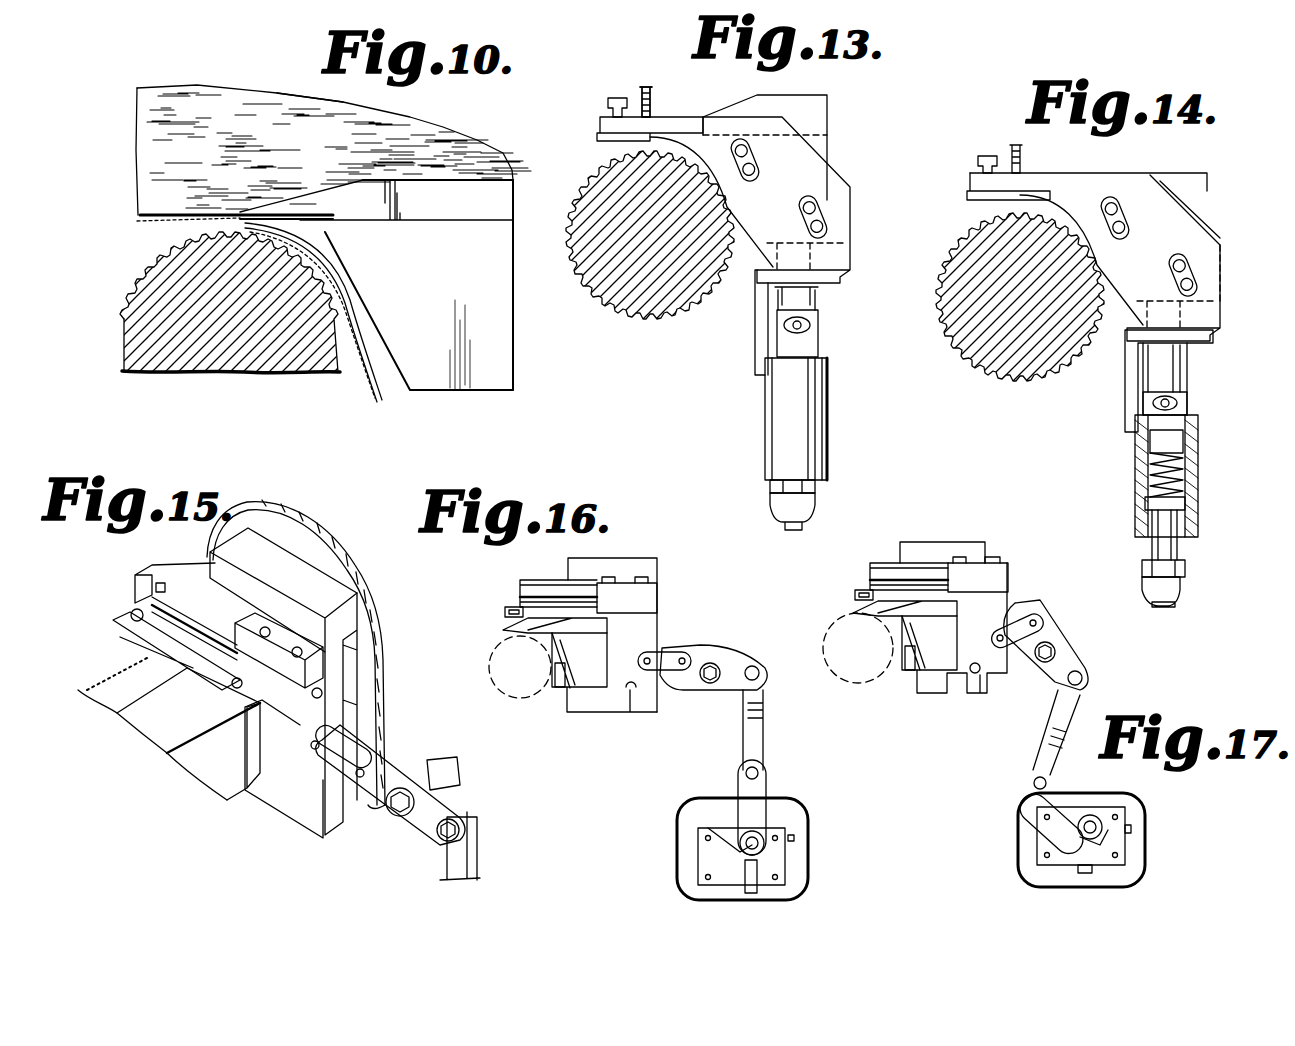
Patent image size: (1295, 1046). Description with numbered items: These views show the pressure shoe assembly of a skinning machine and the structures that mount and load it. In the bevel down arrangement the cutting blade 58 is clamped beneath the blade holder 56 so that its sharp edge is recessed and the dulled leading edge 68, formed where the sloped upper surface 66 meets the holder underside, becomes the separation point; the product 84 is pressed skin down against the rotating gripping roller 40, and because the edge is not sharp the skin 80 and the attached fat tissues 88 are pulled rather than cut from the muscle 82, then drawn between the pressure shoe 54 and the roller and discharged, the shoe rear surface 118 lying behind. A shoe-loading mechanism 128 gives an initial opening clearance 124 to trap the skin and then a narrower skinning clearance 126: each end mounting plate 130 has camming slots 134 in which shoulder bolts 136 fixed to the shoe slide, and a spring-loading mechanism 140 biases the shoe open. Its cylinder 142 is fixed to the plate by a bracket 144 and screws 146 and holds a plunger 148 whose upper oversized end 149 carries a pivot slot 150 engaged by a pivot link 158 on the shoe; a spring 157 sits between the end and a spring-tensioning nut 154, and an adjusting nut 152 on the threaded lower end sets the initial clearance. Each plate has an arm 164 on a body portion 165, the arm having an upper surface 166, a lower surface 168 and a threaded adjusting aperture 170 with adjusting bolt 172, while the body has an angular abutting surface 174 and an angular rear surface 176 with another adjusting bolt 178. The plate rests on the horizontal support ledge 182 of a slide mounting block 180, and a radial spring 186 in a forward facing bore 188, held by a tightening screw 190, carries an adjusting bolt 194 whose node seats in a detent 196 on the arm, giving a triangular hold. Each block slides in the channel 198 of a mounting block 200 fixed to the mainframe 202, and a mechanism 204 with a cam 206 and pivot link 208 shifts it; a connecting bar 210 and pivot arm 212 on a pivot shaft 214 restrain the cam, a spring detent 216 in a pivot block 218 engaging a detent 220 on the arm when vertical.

In FIG. 10, the gripping roller 40 is at (218, 365).
In FIG. 13, the gripping roller 40 is at (658, 318).
In FIG. 14, the gripping roller 40 is at (1025, 375).
In FIG. 16, the gripping roller 40 is at (500, 690).
In FIG. 17, the gripping roller 40 is at (868, 688).
In FIG. 16, the pressure shoe 54 is at (570, 688).
In FIG. 17, the pressure shoe 54 is at (942, 680).
In FIG. 10, the blade holder 56 is at (406, 285).
In FIG. 13, the blade holder 56 is at (813, 112).
In FIG. 15, the blade holder 56 is at (156, 733).
In FIG. 10, the cutting blade 58 is at (328, 222).
In FIG. 10, the upper surface 66 is at (412, 178).
In FIG. 13, the upper surface 66 is at (757, 95).
In FIG. 15, the upper surface 66 is at (196, 706).
In FIG. 10, the leading edge 68 is at (245, 222).
In FIG. 15, the leading edge 68 is at (93, 671).
In FIG. 10, the skin 80 is at (375, 395).
In FIG. 10, the muscle 82 is at (436, 130).
In FIG. 10, the veneer feed 84 is at (244, 72).
In FIG. 10, the fat tissues 88 is at (342, 288).
In FIG. 10, the shoe rear surface 118 is at (513, 388).
In FIG. 15, the shoe rear surface 118 is at (205, 780).
In FIG. 13, the initial opening clearance 124 is at (672, 165).
In FIG. 14, the skinning clearance 126 is at (985, 212).
In FIG. 13, the shoe-loading mechanism 128 is at (860, 264).
In FIG. 14, the shoe-loading mechanism 128 is at (1262, 190).
In FIG. 13, the end mounting plate 130 is at (857, 235).
In FIG. 14, the end mounting plate 130 is at (1218, 230).
In FIG. 13, the camming slots 134 is at (805, 225).
In FIG. 14, the camming slots 134 is at (1205, 265).
In FIG. 13, the shoulder bolts 136 is at (755, 157).
In FIG. 14, the shoulder bolts 136 is at (1195, 290).
In FIG. 13, the spring-loading mechanism 140 is at (843, 385).
In FIG. 14, the spring-loading mechanism 140 is at (1220, 416).
In FIG. 13, the cylinder 142 is at (770, 434).
In FIG. 14, the cylinder 142 is at (1195, 458).
In FIG. 13, the bracket 144 is at (752, 368).
In FIG. 14, the bracket 144 is at (1123, 375).
In FIG. 13, the screws 146 is at (836, 288).
In FIG. 14, the plunger 148 is at (1180, 548).
In FIG. 13, the upper oversized end 149 is at (815, 350).
In FIG. 14, the upper oversized end 149 is at (1138, 444).
In FIG. 13, the pivot slot 150 is at (785, 326).
In FIG. 14, the pivot slot 150 is at (1178, 385).
In FIG. 13, the adjusting nut 152 is at (778, 508).
In FIG. 14, the adjusting nut 152 is at (1182, 590).
In FIG. 14, the spring-tensioning nut 154 is at (1185, 514).
In FIG. 14, the spring 157 is at (1186, 476).
In FIG. 13, the pivot link 158 is at (812, 326).
In FIG. 14, the pivot link 158 is at (1160, 408).
In FIG. 13, the arm 164 is at (670, 118).
In FIG. 14, the arm 164 is at (1042, 180).
In FIG. 13, the body portion 165 is at (840, 191).
In FIG. 14, the body portion 165 is at (1158, 185).
In FIG. 13, the upper surface 166 is at (720, 117).
In FIG. 13, the lower surface 168 is at (632, 142).
In FIG. 14, the threaded adjusting aperture 170 is at (975, 176).
In FIG. 13, the adjusting bolt 172 is at (612, 98).
In FIG. 14, the adjusting bolt 172 is at (985, 158).
In FIG. 16, the adjusting bolt 172 is at (510, 610).
In FIG. 17, the adjusting bolt 172 is at (858, 595).
In FIG. 14, the angular abutting surface 174 is at (1120, 280).
In FIG. 13, the angular rear surface 176 is at (838, 170).
In FIG. 14, the angular rear surface 176 is at (1200, 183).
In FIG. 15, the adjusting bolt 178 is at (235, 692).
In FIG. 15, the slide mounting block 180 is at (352, 684).
In FIG. 16, the slide mounting block 180 is at (655, 612).
In FIG. 17, the slide mounting block 180 is at (1018, 595).
In FIG. 13, the horizontal support ledge 182 is at (597, 136).
In FIG. 14, the horizontal support ledge 182 is at (968, 196).
In FIG. 15, the horizontal support ledge 182 is at (113, 622).
In FIG. 16, the horizontal support ledge 182 is at (503, 632).
In FIG. 17, the horizontal support ledge 182 is at (898, 612).
In FIG. 15, the radial spring 186 is at (192, 618).
In FIG. 16, the radial spring 186 is at (544, 590).
In FIG. 17, the radial spring 186 is at (905, 572).
In FIG. 15, the forward facing bore 188 is at (317, 700).
In FIG. 15, the tightening screw 190 is at (300, 640).
In FIG. 13, the adjusting bolt 194 is at (645, 85).
In FIG. 15, the adjusting bolt 194 is at (157, 585).
In FIG. 17, the adjusting bolt 194 is at (868, 572).
In FIG. 13, the detent 196 is at (655, 112).
In FIG. 15, the channel 198 is at (355, 650).
In FIG. 16, the channel 198 is at (620, 712).
In FIG. 17, the channel 198 is at (975, 693).
In FIG. 15, the mounting block 200 is at (360, 606).
In FIG. 16, the mounting block 200 is at (645, 565).
In FIG. 17, the mounting block 200 is at (985, 542).
In FIG. 15, the mainframe 202 is at (290, 522).
In FIG. 16, the mainframe 202 is at (800, 810).
In FIG. 17, the mainframe 202 is at (1140, 870).
In FIG. 16, the mechanism 204 is at (721, 622).
In FIG. 17, the mechanism 204 is at (1104, 685).
In FIG. 15, the cam 206 is at (412, 832).
In FIG. 16, the cam 206 is at (735, 660).
In FIG. 17, the cam 206 is at (1055, 635).
In FIG. 15, the pivot link 208 is at (375, 740).
In FIG. 16, the pivot link 208 is at (672, 655).
In FIG. 17, the pivot link 208 is at (1005, 633).
In FIG. 16, the connecting bar 210 is at (745, 742).
In FIG. 17, the connecting bar 210 is at (1062, 716).
In FIG. 16, the pivot arm 212 is at (762, 792).
In FIG. 17, the pivot arm 212 is at (1058, 790).
In FIG. 16, the pivot shaft 214 is at (745, 850).
In FIG. 17, the pivot shaft 214 is at (1090, 820).
In FIG. 16, the spring detent 216 is at (793, 838).
In FIG. 17, the spring detent 216 is at (1075, 870).
In FIG. 16, the pivot block 218 is at (698, 848).
In FIG. 17, the pivot block 218 is at (1037, 835).
In FIG. 17, the detent 220 is at (1135, 840).